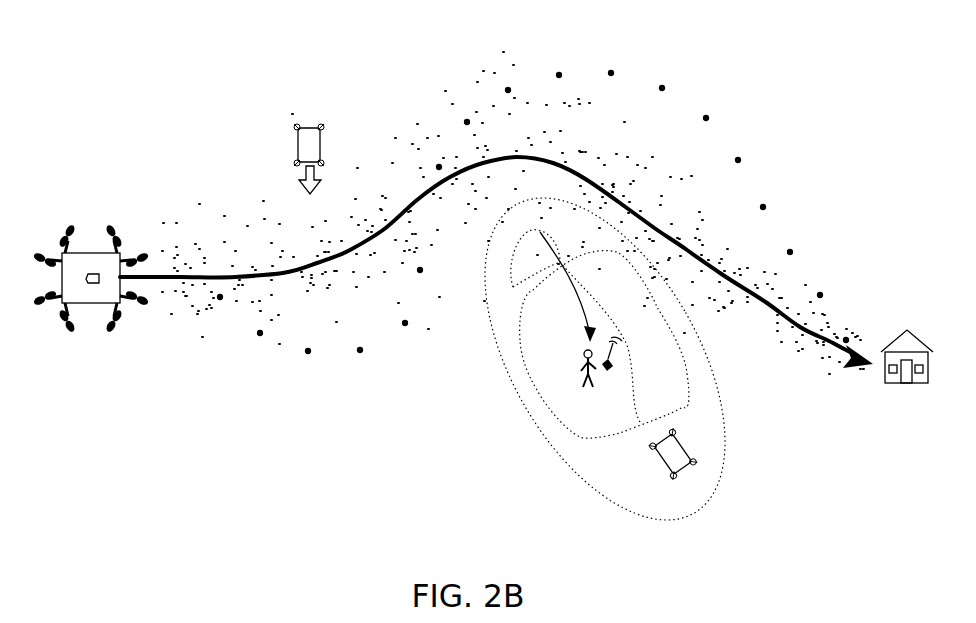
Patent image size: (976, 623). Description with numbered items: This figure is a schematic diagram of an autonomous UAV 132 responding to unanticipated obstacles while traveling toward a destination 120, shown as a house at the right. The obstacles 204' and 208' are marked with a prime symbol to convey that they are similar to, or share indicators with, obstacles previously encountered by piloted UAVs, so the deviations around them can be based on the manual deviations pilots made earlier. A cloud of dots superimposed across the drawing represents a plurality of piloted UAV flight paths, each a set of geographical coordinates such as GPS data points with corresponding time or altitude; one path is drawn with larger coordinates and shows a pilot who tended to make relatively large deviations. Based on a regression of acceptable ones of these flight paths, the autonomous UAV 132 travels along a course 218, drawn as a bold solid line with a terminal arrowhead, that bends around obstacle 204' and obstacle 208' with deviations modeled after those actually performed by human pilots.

The autonomous UAV 132 is at (93, 243).
The unanticipated obstacle 204' is at (262, 156).
The unanticipated obstacle 208' is at (730, 466).
The destination 120 is at (907, 370).
The course 218 is at (293, 273).